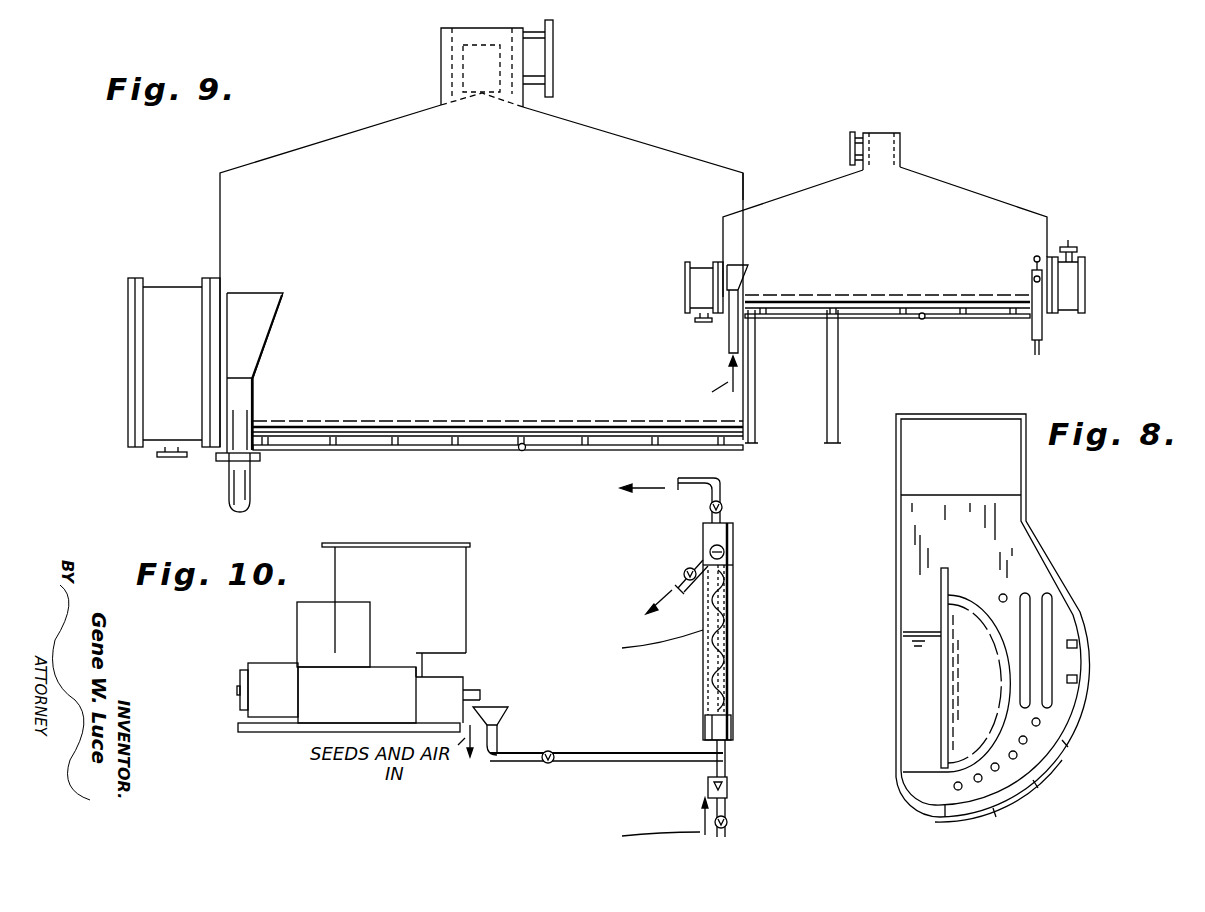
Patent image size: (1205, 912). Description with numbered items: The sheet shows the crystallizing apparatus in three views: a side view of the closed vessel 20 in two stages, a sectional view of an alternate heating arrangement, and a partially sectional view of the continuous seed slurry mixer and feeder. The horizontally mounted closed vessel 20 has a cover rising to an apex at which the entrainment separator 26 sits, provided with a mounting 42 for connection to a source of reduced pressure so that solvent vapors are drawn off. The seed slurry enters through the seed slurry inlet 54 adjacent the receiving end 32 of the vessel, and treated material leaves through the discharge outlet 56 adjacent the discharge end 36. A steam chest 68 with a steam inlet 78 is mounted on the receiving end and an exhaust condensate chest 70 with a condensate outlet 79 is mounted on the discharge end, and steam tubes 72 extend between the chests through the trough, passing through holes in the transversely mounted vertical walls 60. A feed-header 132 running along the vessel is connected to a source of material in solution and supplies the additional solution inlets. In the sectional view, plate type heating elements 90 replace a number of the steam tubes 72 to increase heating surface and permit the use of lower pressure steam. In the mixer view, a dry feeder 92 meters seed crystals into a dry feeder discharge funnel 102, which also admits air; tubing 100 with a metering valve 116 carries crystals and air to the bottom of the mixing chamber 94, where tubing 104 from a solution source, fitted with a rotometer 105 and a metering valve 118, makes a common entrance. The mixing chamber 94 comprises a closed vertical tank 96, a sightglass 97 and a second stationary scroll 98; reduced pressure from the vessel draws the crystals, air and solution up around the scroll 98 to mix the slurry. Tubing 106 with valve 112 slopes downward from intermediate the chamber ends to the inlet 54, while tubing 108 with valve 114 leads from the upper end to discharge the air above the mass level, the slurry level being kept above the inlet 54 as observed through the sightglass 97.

In FIG. 9, the closed vessel 20 is at (632, 165).
In FIG. 9, the entrainment separator 26 is at (450, 92).
In FIG. 9, the receiving end 32 is at (741, 184).
In FIG. 9, the discharge end 36 is at (220, 200).
In FIG. 9, the mounting 42 is at (556, 60).
In FIG. 9, the seed slurry inlet 54 is at (730, 350).
In FIG. 9, the discharge outlet 56 is at (258, 335).
In FIG. 8, the vertical walls 60 is at (1005, 521).
In FIG. 9, the steam chest 68 is at (805, 415).
In FIG. 9, the exhaust condensate chest 70 is at (163, 305).
In FIG. 8, the steam tubes 72 is at (1000, 768).
In FIG. 9, the steam inlet 78 is at (1070, 248).
In FIG. 9, the condensate outlet 79 is at (165, 455).
In FIG. 8, the plate type heating elements 90 is at (1047, 600).
In FIG. 10, the dry feeder 92 is at (318, 608).
In FIG. 9, the mixing chamber 94 is at (1032, 325).
In FIG. 10, the mixing chamber 94 is at (703, 734).
In FIG. 10, the closed vertical tank 96 is at (703, 635).
In FIG. 10, the sightglass 97 is at (726, 556).
In FIG. 10, the second stationary scroll 98 is at (722, 610).
In FIG. 10, the tubing 100 is at (632, 764).
In FIG. 10, the dry feeder discharge funnel 102 is at (503, 720).
In FIG. 10, the tubing 104 is at (702, 805).
In FIG. 10, the rotometer 105 is at (730, 787).
In FIG. 10, the tubing 106 is at (675, 580).
In FIG. 10, the tubing 108 is at (710, 488).
In FIG. 10, the valve 112 is at (684, 566).
In FIG. 10, the valve 114 is at (724, 507).
In FIG. 10, the metering valve 116 is at (545, 763).
In FIG. 10, the metering valve 118 is at (730, 822).
In FIG. 9, the feed-header 132 is at (462, 445).